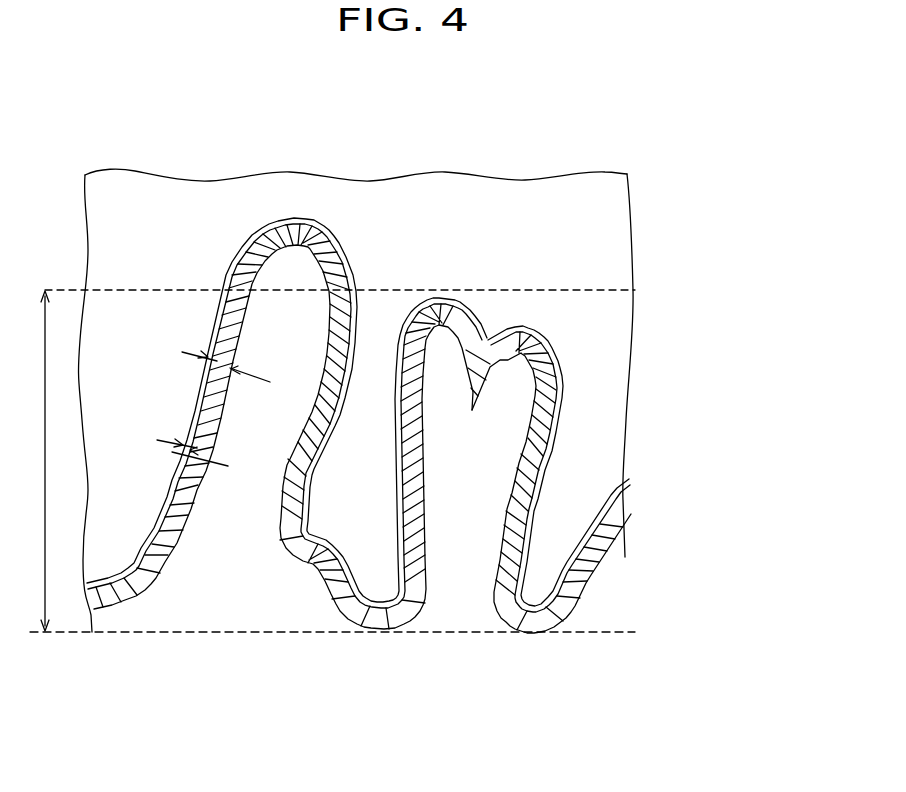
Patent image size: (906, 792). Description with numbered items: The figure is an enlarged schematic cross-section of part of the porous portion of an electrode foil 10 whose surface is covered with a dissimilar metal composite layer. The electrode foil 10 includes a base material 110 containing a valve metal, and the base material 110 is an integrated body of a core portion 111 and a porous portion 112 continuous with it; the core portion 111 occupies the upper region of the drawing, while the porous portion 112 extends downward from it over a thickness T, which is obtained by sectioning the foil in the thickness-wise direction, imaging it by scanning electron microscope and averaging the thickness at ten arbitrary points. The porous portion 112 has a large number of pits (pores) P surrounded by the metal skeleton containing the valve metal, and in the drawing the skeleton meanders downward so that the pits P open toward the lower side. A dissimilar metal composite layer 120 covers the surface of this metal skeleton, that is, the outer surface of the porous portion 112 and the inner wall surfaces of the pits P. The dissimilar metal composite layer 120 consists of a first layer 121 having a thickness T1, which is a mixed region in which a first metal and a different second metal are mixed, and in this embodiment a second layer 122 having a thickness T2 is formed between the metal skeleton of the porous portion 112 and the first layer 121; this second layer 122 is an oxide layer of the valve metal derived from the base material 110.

The electrode foil 10 is at (371, 143).
The base material 110 is at (432, 400).
The core portion 111 is at (598, 212).
The porous portion 112 is at (572, 482).
The dissimilar metal composite layer 120 is at (436, 425).
The first layer 121 is at (732, 442).
The second layer 122 is at (604, 488).
The thickness of porous portion T is at (328, 461).
The thickness of first layer T1 is at (208, 355).
The thickness of second layer T2 is at (183, 442).
The pits (pores) P is at (240, 510).